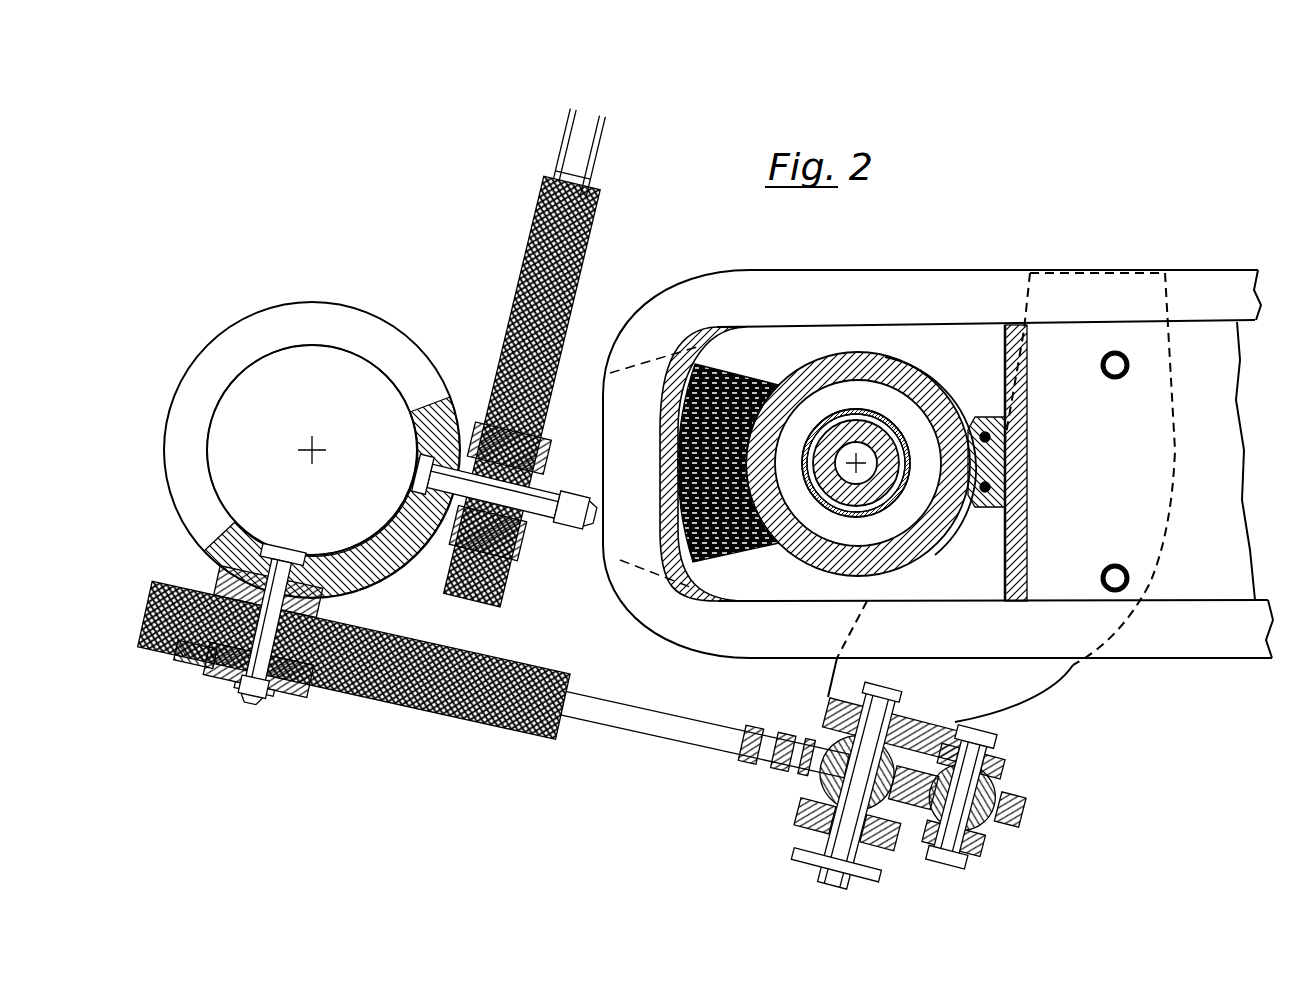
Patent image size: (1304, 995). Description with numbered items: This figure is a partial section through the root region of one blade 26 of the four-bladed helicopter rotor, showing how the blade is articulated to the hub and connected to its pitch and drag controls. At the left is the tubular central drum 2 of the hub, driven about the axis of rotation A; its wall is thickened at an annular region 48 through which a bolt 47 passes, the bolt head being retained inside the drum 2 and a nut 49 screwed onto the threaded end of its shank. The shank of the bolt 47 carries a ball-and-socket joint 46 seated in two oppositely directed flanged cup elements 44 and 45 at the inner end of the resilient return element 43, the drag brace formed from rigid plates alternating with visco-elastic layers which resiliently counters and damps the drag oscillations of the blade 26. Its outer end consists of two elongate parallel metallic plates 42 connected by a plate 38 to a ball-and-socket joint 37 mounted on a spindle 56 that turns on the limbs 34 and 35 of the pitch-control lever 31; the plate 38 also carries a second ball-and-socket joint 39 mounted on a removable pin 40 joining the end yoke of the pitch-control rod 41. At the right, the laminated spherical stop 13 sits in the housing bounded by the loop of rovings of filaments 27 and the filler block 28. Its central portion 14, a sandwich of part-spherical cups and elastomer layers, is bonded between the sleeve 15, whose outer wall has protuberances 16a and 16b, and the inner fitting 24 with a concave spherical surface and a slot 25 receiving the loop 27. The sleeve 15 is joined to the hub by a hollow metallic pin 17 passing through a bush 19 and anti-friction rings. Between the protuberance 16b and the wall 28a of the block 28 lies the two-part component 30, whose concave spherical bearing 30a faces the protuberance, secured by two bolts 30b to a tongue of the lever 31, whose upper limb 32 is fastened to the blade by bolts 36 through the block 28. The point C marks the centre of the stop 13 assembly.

The central drum 2 is at (355, 306).
The laminated spherical stop 13 is at (770, 360).
The central portion of the stop 14 is at (745, 560).
The sleeve 15 is at (885, 353).
The protuberance 16a is at (760, 465).
The protuberance 16b is at (952, 480).
The hollow metallic pin 17 is at (876, 495).
The bush 19 is at (822, 490).
The inner fitting 24 is at (703, 577).
The slot 25 is at (673, 553).
The blade 26 is at (1228, 238).
The loop of rovings of filaments 27 is at (793, 296).
The filler block 28 is at (1227, 418).
The wall of the filler block 28a is at (1003, 385).
The two-part component 30 is at (985, 505).
The concave spherical bearing 30a is at (985, 432).
The bolts 30b is at (992, 447).
The pitch-control lever 31 is at (1076, 690).
The upper limb 32 is at (1152, 478).
The limb 34 is at (920, 722).
The limb 35 is at (895, 840).
The bolts 36 is at (1120, 570).
The ball-and-socket joint 37 is at (835, 745).
The plate 38 is at (1012, 820).
The ball-and-socket joint 39 is at (992, 792).
The removable pin 40 is at (988, 855).
The pitch-control rod 41 is at (1012, 760).
The elongate parallel metallic plates 42 is at (697, 752).
The resilient return element 43 is at (380, 702).
The flanged cup element 44 is at (303, 690).
The flanged cup element 45 is at (333, 611).
The ball-and-socket joint 46 is at (215, 670).
The bolt 47 is at (285, 545).
The annular region 48 is at (232, 372).
The nut 49 is at (240, 695).
The spindle 56 is at (840, 818).
The axis of rotation A is at (317, 450).
The shaft axis C is at (857, 460).